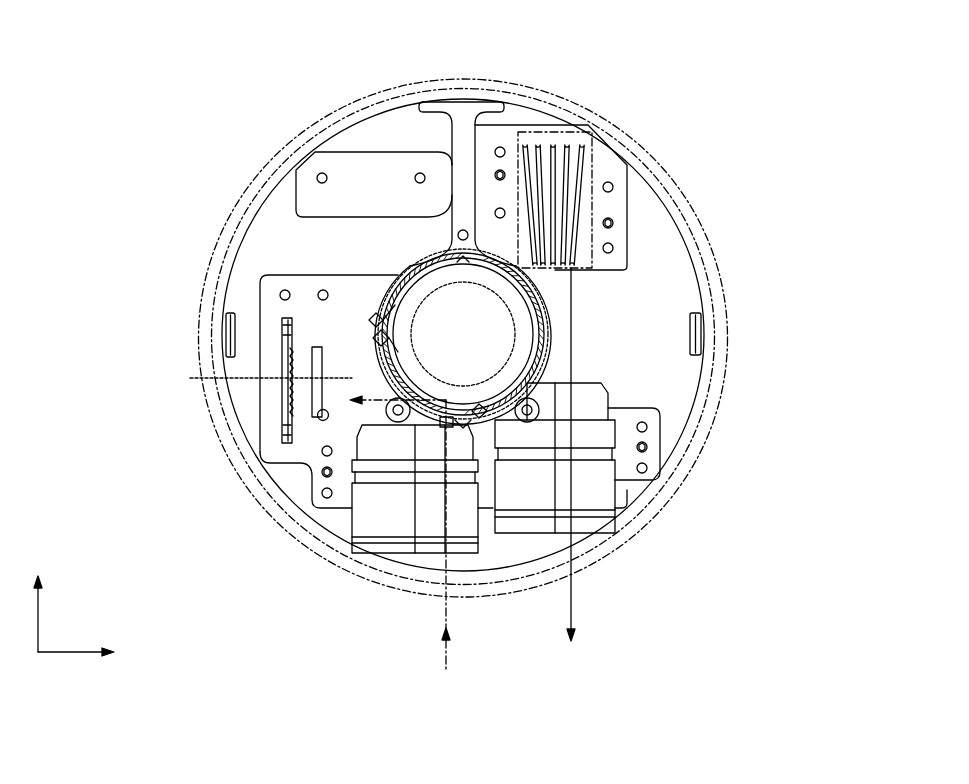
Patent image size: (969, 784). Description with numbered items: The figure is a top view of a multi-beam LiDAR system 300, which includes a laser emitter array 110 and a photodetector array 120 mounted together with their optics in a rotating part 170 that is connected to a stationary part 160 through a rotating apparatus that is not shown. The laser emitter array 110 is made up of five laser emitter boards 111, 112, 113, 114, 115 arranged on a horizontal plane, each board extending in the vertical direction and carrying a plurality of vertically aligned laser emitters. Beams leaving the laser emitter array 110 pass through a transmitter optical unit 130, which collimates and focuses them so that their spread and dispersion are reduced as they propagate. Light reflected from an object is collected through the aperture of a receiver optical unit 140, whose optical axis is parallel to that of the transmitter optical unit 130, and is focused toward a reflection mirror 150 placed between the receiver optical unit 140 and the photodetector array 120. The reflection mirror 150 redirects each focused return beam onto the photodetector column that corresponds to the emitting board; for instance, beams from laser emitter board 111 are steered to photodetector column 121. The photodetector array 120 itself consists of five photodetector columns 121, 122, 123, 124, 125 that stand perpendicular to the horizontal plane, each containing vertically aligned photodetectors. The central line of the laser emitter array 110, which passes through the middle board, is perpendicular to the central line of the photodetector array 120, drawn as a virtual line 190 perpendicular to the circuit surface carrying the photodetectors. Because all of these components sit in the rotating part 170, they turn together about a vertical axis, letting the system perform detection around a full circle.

The multi-beam LiDAR system 300 is at (513, 14).
The laser emitter array 110 is at (582, 157).
The laser emitter board 111 is at (581, 147).
The laser emitter board 112 is at (566, 147).
The laser emitter board 113 is at (552, 147).
The laser emitter board 114 is at (536, 147).
The laser emitter board 115 is at (521, 147).
The photodetector array 120 is at (293, 326).
The photodetector column 121 is at (282, 430).
The photodetector column 122 is at (282, 412).
The photodetector column 123 is at (282, 395).
The photodetector column 124 is at (282, 380).
The photodetector column 125 is at (282, 362).
The transmitter optical unit 130 is at (605, 489).
The receiver optical unit 140 is at (379, 512).
The reflection mirror 150 is at (382, 307).
The stationary part 160 is at (474, 337).
The rotating part 170 is at (665, 300).
The virtual line 190 is at (282, 371).